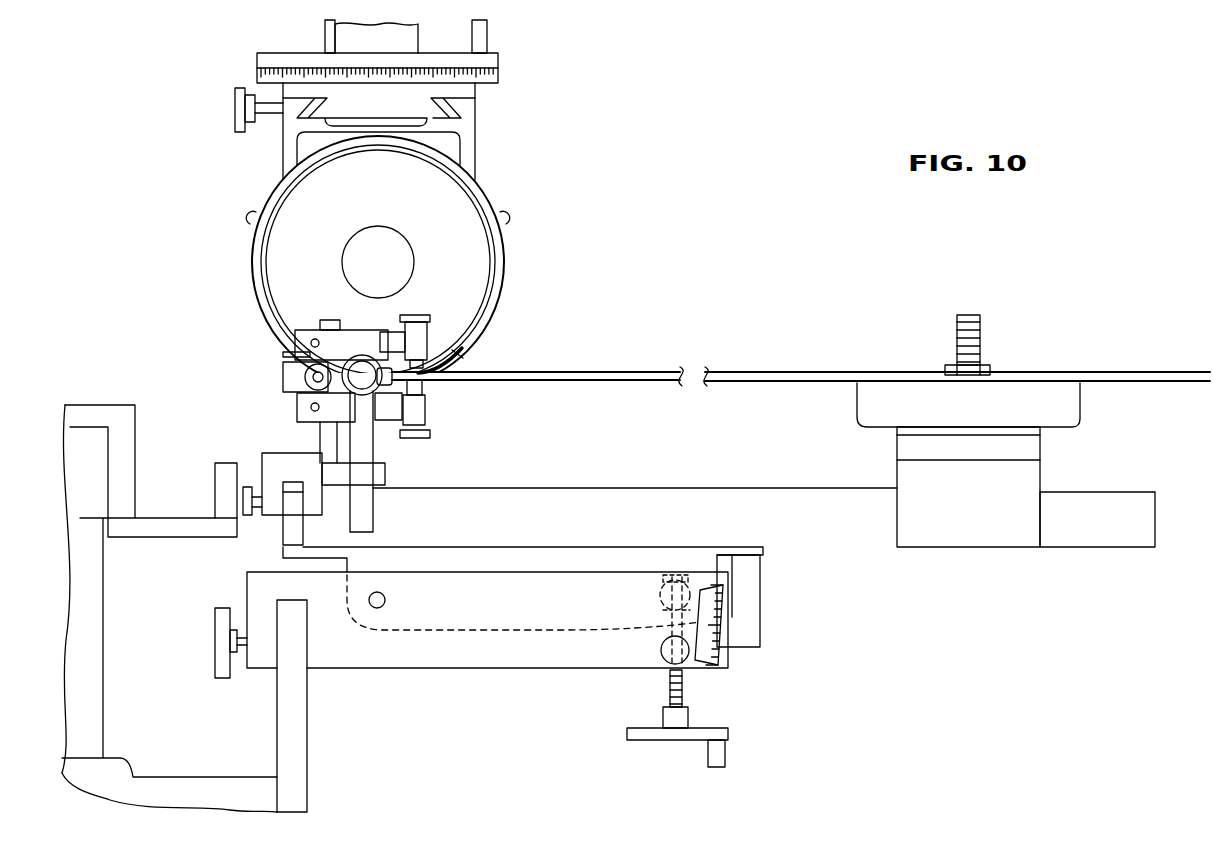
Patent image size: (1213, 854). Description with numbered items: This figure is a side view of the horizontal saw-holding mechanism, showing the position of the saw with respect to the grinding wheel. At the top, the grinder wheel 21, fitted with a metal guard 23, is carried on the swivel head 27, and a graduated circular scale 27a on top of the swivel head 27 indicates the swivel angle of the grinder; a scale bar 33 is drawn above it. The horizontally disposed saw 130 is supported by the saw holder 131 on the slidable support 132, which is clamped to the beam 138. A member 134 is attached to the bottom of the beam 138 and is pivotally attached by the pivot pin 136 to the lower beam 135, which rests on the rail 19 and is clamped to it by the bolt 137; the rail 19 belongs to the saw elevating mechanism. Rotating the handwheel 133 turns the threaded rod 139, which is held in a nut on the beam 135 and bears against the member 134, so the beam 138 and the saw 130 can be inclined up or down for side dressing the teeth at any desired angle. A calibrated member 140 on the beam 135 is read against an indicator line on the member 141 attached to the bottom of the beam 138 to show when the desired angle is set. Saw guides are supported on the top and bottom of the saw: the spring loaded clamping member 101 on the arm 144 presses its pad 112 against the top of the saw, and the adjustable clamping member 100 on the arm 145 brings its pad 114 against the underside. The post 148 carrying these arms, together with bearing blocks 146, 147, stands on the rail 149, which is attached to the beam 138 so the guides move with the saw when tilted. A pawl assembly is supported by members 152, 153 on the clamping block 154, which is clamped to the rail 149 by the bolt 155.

The rail 19 is at (307, 712).
The grinder wheel 21 is at (480, 292).
The metal guard 23 is at (505, 270).
The swivel head 27 is at (475, 109).
The graduated circular scale 27a is at (498, 77).
The scale bar 33 is at (493, 60).
The adjustable clamping member 100 is at (427, 410).
The spring loaded clamping member 101 is at (440, 340).
The pad 112 is at (440, 372).
The pad 114 is at (428, 382).
The saw 130 is at (718, 373).
The saw holder 131 is at (982, 343).
The slidable support 132 is at (1032, 470).
The handwheel 133 is at (740, 738).
The member 134 is at (462, 552).
The beam 135 is at (530, 668).
The pivot pin 136 is at (385, 600).
The bolt 137 is at (215, 625).
The beam 138 is at (1128, 495).
The threaded rod 139 is at (682, 690).
The calibrated member 140 is at (728, 628).
The member 141 is at (755, 590).
The arm 144 is at (423, 340).
The arm 145 is at (390, 407).
The upper block 146 is at (314, 339).
The bearing block 147 is at (283, 377).
The post 148 is at (297, 407).
The rail 149 is at (290, 527).
The member 152 is at (373, 512).
The member 153 is at (385, 471).
The clamping block 154 is at (262, 458).
The bolt 155 is at (243, 497).